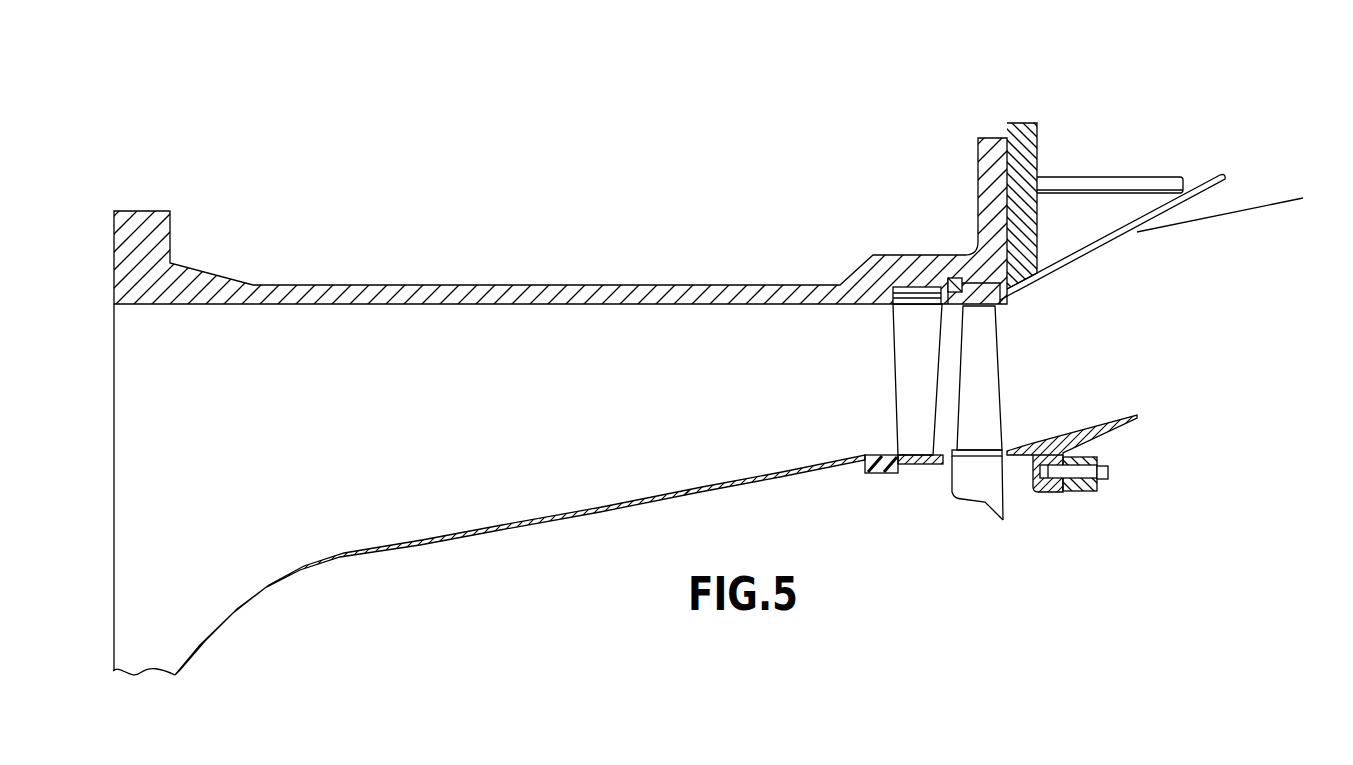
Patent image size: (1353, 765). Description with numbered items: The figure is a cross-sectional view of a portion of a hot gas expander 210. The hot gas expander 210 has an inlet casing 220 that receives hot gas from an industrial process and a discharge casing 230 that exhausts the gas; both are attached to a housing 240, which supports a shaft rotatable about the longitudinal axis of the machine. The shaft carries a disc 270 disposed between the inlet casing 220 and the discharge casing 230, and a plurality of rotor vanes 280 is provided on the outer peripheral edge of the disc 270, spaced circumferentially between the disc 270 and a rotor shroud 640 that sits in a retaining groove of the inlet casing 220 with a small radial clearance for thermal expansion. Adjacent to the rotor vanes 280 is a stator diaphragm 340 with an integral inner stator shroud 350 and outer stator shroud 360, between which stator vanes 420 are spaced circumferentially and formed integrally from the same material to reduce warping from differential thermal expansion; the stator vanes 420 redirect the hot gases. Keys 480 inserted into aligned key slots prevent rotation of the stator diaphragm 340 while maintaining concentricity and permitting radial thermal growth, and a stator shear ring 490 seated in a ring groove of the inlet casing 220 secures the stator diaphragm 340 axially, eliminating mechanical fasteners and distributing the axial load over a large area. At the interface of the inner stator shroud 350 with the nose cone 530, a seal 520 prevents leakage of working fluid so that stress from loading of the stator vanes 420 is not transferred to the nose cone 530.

The hot gas expander 210 is at (1178, 75).
The inlet casing 220 is at (853, 273).
The discharge casing 230 is at (1258, 188).
The housing 240 is at (1097, 458).
The disc 270 is at (1007, 497).
The rotor vanes 280 is at (985, 407).
The stator diaphragm 340 is at (894, 353).
The inner stator shroud 350 is at (918, 463).
The outer stator shroud 360 is at (929, 266).
The stator vanes 420 is at (927, 320).
The keys 480 is at (912, 287).
The stator shear ring 490 is at (1020, 257).
The seal 520 is at (885, 473).
The nose cone 530 is at (728, 485).
The rotor shroud 640 is at (1002, 305).